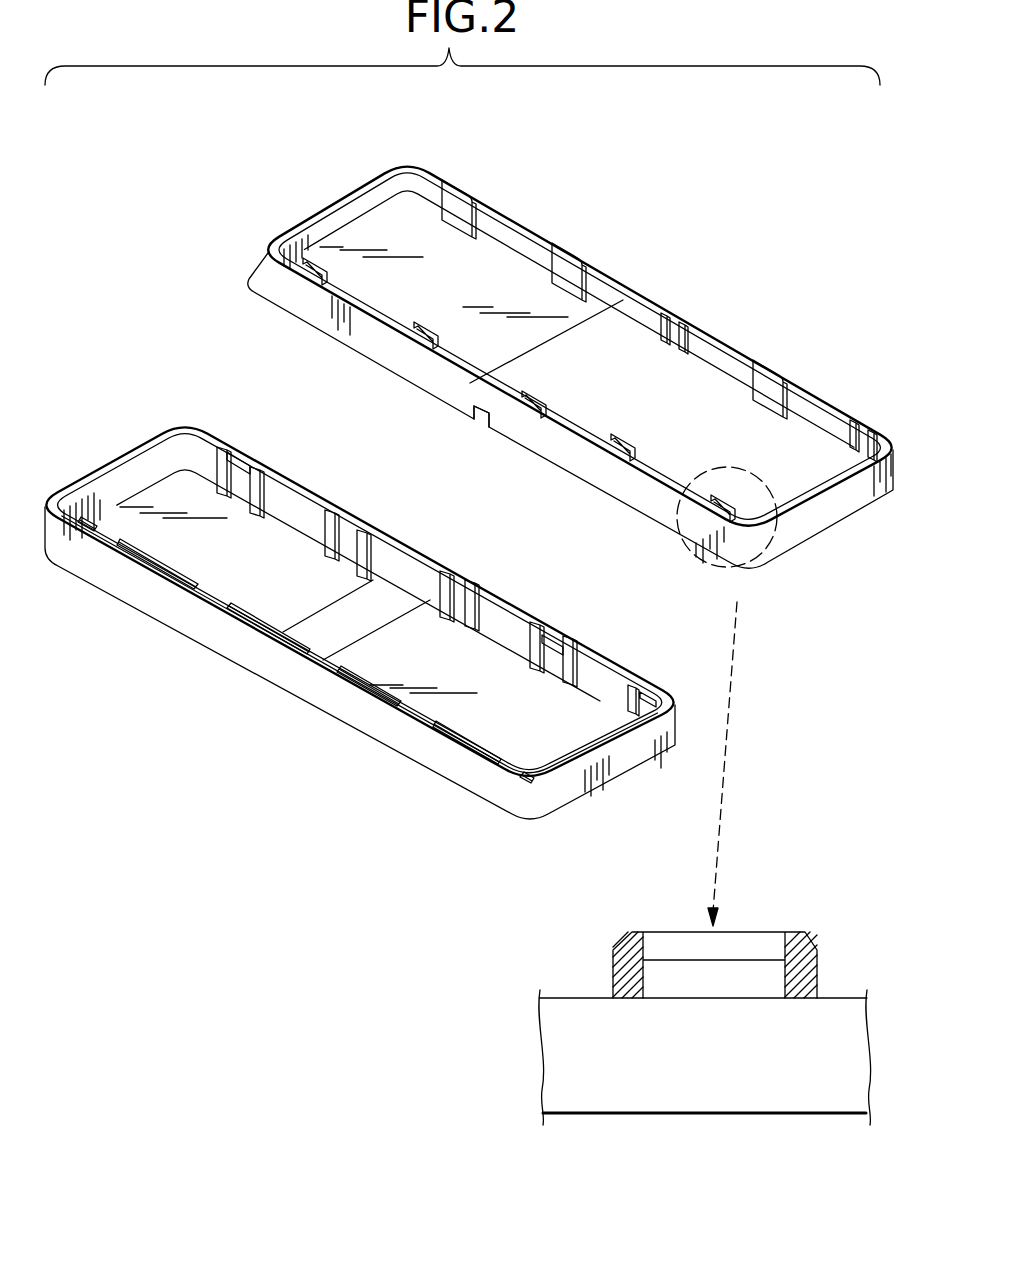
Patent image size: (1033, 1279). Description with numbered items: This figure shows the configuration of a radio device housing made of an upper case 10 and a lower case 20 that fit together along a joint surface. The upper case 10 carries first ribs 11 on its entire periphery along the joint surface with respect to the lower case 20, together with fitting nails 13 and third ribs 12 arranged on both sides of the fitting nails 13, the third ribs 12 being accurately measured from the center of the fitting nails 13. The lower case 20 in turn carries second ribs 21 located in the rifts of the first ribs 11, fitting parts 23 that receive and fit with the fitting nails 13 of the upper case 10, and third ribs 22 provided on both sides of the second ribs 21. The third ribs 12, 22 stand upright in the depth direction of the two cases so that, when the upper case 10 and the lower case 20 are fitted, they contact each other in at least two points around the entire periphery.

The upper case 10 is at (600, 772).
The first ribs 11 is at (118, 548).
The third ribs 12 is at (250, 467).
The fitting nails 13 is at (240, 474).
The lower case 20 is at (850, 500).
The second ribs 21 is at (530, 408).
The third ribs 22 is at (548, 396).
The fitting parts 23 is at (430, 328).